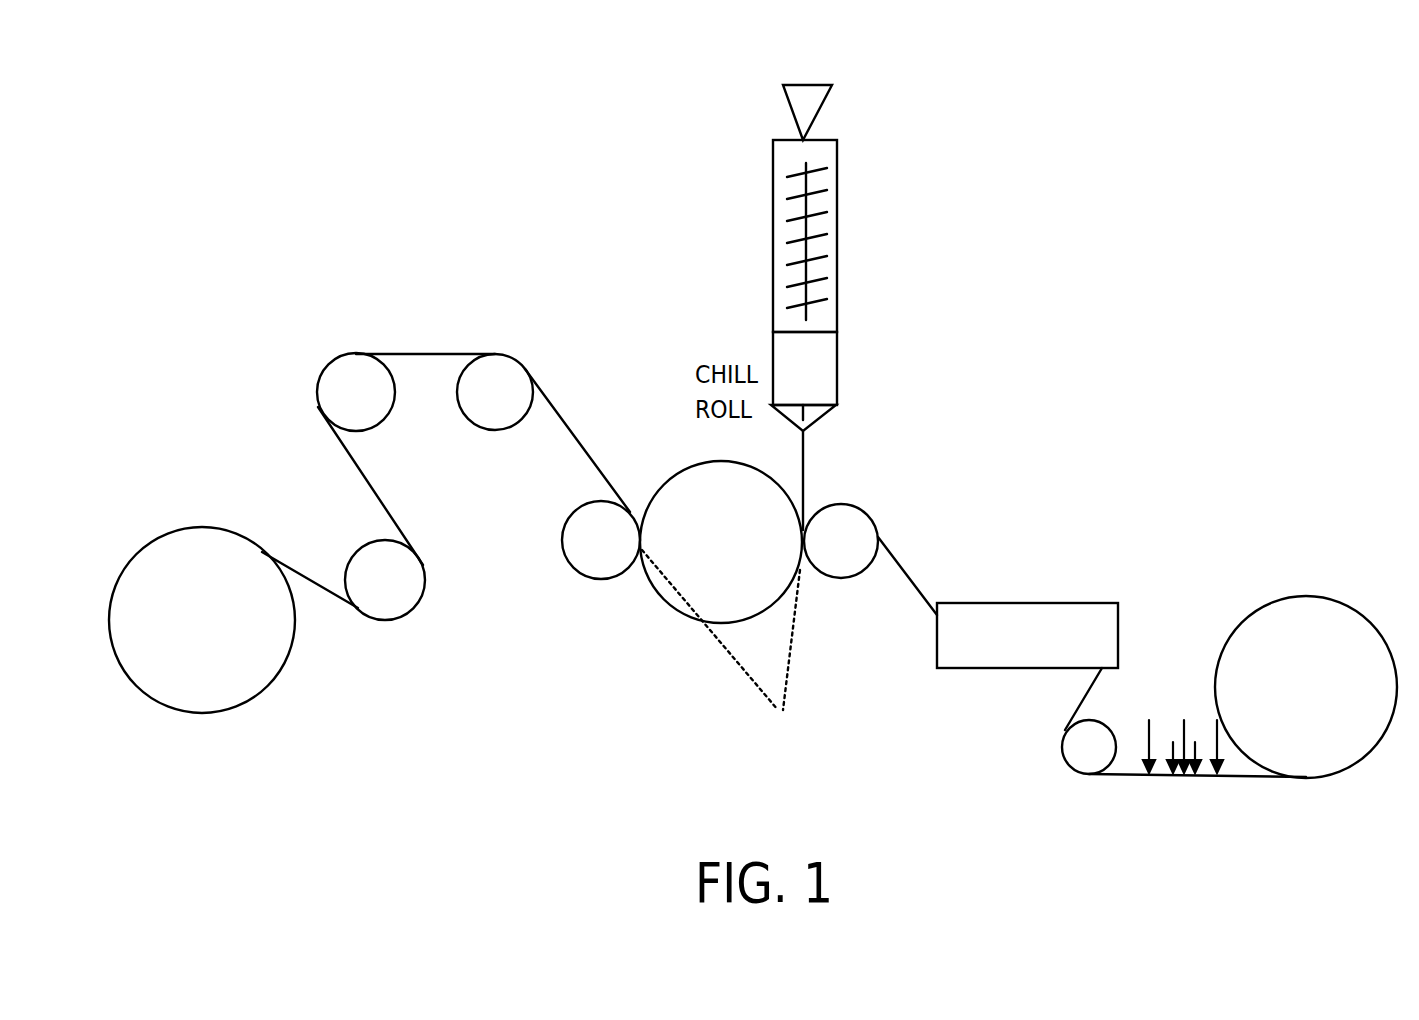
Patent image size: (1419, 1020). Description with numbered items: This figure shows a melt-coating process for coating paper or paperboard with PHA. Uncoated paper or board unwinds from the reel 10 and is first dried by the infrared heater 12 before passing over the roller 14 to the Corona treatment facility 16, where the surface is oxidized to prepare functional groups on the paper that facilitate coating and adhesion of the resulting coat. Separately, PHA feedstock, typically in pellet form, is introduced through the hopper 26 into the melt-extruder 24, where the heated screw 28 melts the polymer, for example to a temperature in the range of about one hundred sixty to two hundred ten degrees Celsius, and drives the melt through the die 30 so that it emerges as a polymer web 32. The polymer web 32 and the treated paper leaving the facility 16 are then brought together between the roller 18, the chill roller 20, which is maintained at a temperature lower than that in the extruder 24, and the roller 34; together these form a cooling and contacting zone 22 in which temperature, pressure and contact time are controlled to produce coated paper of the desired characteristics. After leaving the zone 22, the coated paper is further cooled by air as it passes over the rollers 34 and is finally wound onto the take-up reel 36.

The unwind roll 10 is at (1293, 703).
The infrared heater 12 is at (1171, 768).
The idler roll 14 is at (1073, 760).
The corona treater 16 is at (1009, 647).
The nip roll 18 is at (847, 558).
The chill roll 20 is at (706, 556).
The wrap angle 22 is at (721, 650).
The extruder 24 is at (837, 272).
The hopper 26 is at (832, 88).
The extruder screw 28 is at (827, 176).
The die 30 is at (827, 373).
The polymer web 32 is at (890, 467).
The idler rolls 34 is at (587, 557).
The rewind roll 36 is at (183, 634).